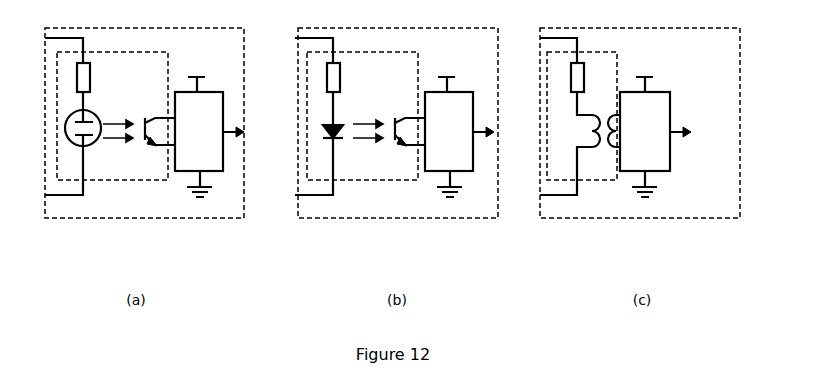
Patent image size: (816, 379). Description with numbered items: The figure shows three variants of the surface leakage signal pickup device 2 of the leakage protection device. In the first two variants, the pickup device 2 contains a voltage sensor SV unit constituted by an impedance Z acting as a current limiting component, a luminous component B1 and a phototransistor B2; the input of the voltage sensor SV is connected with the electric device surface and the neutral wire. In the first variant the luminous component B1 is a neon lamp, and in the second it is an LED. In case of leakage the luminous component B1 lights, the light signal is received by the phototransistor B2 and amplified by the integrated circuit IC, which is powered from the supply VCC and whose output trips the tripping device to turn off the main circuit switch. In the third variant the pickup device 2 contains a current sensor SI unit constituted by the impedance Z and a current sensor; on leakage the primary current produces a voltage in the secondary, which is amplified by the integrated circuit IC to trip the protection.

The surface leakage signal pickup device 2 is at (140, 212).
The voltage sensor unit SV is at (130, 175).
The current sensor unit SI is at (605, 177).
The current limiting component Z is at (339, 77).
The luminous component B1 is at (224, 143).
The photosensitive component B2 is at (285, 147).
The amplifier integrated circuit IC is at (433, 144).
The supply voltage VCC is at (420, 75).